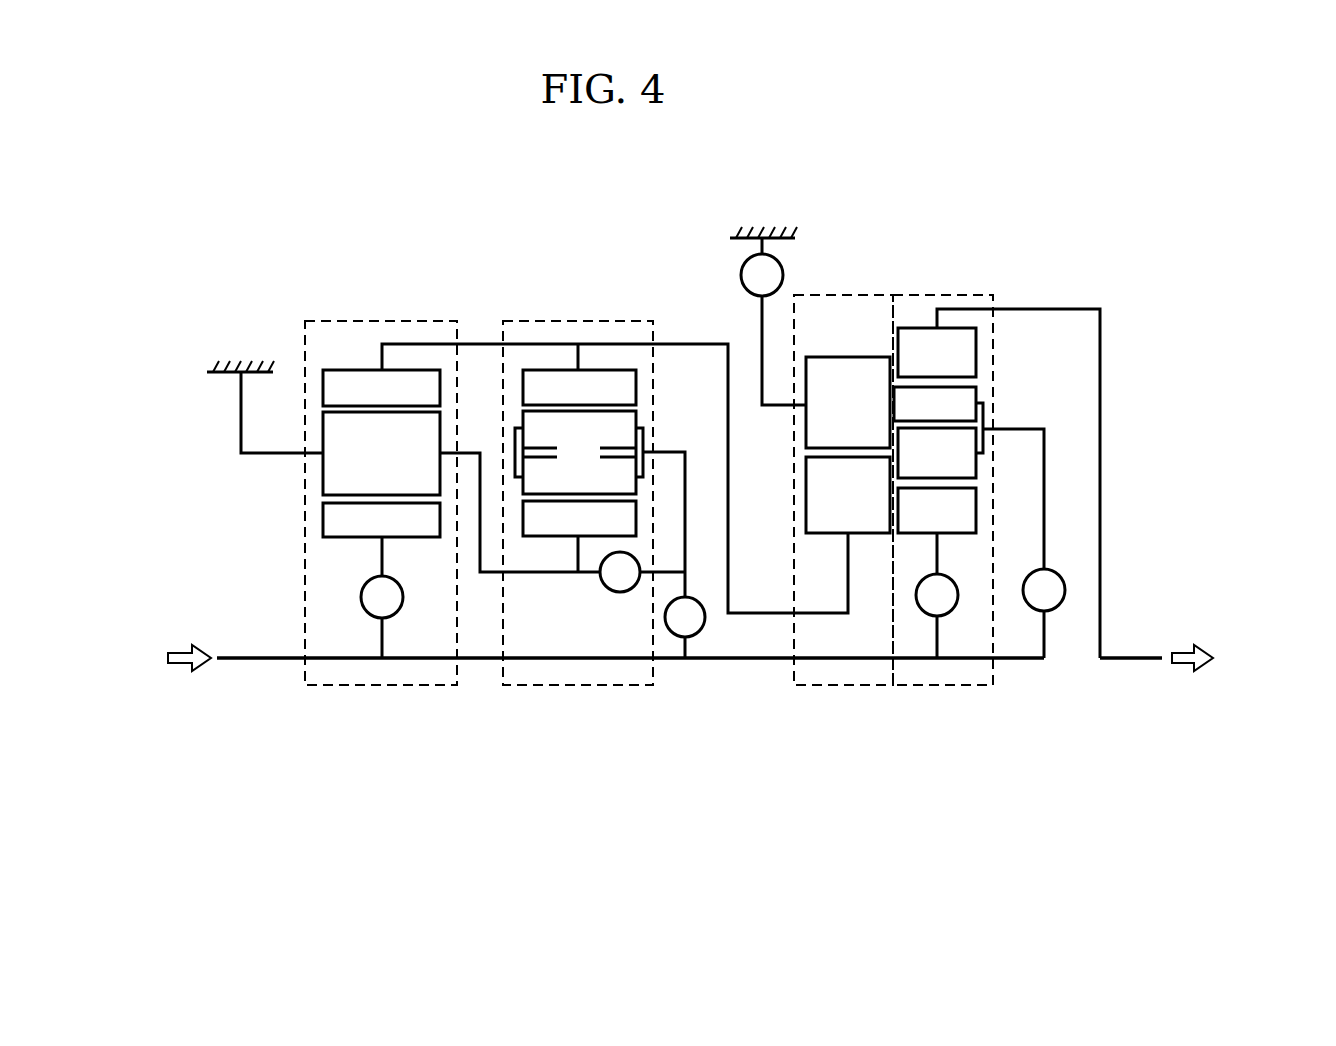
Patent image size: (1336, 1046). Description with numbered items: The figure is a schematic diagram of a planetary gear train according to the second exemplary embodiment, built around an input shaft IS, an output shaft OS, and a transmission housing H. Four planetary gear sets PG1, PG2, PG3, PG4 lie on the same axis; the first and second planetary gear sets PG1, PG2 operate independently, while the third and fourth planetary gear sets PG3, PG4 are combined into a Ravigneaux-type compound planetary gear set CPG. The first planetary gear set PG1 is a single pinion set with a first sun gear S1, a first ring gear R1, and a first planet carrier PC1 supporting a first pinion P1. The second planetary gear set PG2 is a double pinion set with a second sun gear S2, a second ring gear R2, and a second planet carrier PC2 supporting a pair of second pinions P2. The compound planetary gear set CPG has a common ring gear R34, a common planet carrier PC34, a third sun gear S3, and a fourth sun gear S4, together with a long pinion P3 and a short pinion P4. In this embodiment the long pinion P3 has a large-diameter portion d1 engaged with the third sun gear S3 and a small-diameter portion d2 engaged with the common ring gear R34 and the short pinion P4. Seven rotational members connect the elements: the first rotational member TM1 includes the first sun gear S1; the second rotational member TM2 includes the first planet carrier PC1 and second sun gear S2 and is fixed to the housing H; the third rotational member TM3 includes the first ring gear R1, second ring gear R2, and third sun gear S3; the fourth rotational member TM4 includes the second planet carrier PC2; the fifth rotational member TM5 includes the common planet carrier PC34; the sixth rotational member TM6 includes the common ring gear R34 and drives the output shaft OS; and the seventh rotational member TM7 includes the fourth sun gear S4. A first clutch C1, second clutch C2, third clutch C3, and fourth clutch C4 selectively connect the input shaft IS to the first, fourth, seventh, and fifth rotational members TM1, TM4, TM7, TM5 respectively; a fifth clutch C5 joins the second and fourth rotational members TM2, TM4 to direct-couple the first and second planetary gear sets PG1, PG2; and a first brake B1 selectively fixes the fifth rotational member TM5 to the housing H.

The input shaft IS is at (247, 662).
The output shaft OS is at (1123, 661).
The transmission housing H is at (244, 358).
The first planetary gear set PG1 is at (383, 688).
The second planetary gear set PG2 is at (582, 688).
The third planetary gear set PG3 is at (863, 688).
The fourth planetary gear set PG4 is at (943, 688).
The compound planetary gear set CPG is at (858, 800).
The first ring gear R1 is at (381, 388).
The second ring gear R2 is at (579, 387).
The common ring gear R34 is at (937, 352).
The first pinion P1 is at (381, 453).
The second pinions P2 is at (579, 452).
The long pinion P3 is at (893, 405).
The short pinion P4 is at (937, 453).
The first sun gear S1 is at (381, 520).
The second sun gear S2 is at (579, 518).
The third sun gear S3 is at (848, 495).
The fourth sun gear S4 is at (937, 510).
The first planet carrier PC1 is at (313, 468).
The second planet carrier PC2 is at (648, 442).
The common planet carrier PC34 is at (985, 410).
The large-diameter portion d1 is at (848, 402).
The small-diameter portion d2 is at (935, 404).
The first rotational member TM1 is at (382, 557).
The second rotational member TM2 is at (530, 576).
The third rotational member TM3 is at (482, 340).
The fourth rotational member TM4 is at (685, 478).
The fifth rotational member TM5 is at (1044, 480).
The sixth rotational member TM6 is at (1028, 306).
The seventh rotational member TM7 is at (937, 553).
The first clutch C1 is at (382, 597).
The second clutch C2 is at (685, 617).
The third clutch C3 is at (937, 595).
The fourth clutch C4 is at (1044, 590).
The fifth clutch C5 is at (620, 572).
The first brake B1 is at (773, 321).